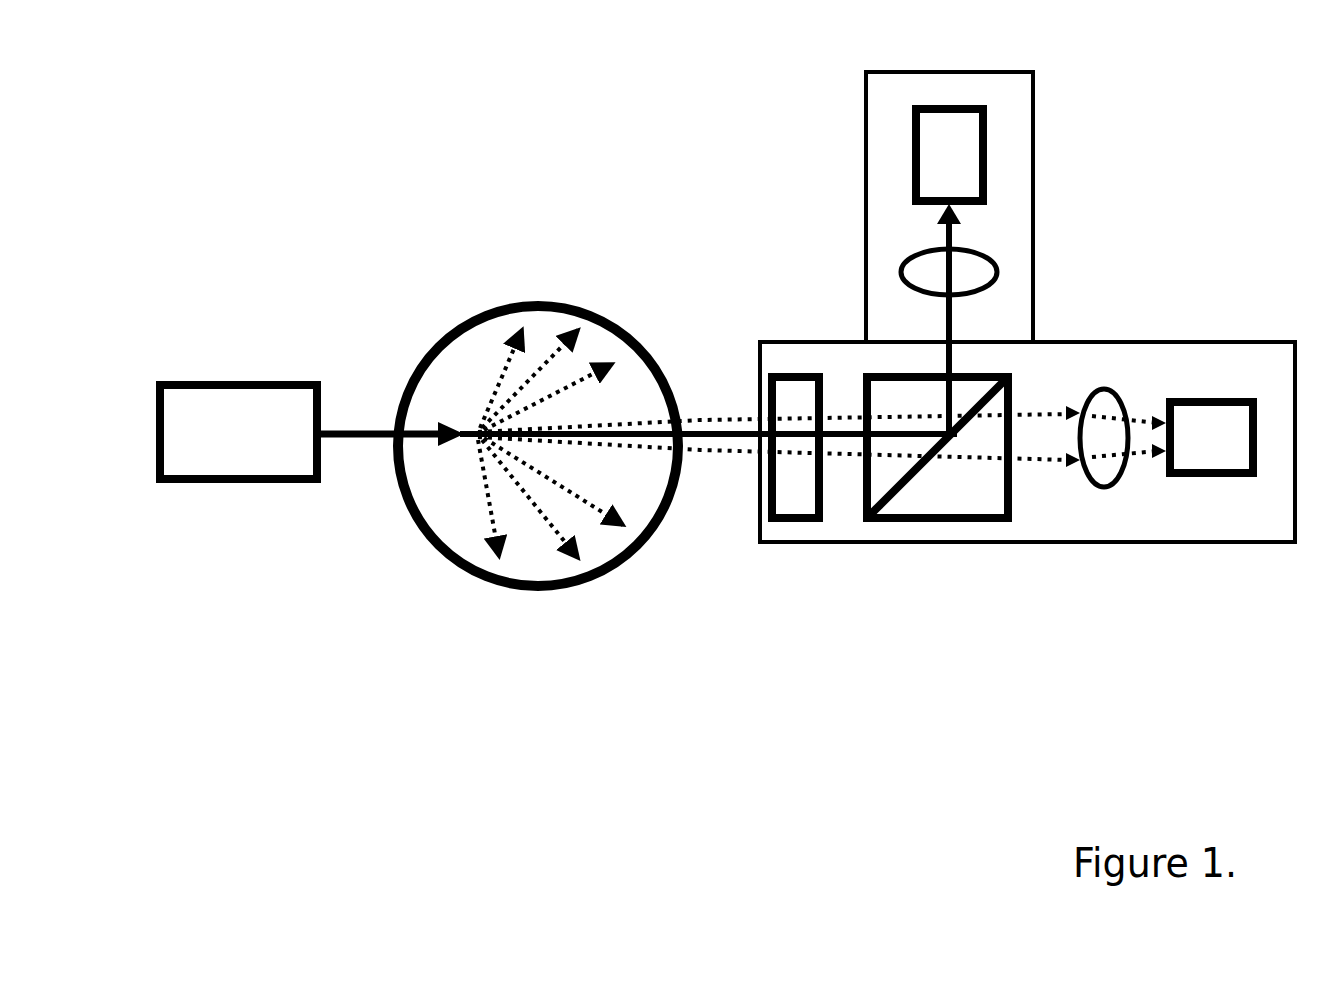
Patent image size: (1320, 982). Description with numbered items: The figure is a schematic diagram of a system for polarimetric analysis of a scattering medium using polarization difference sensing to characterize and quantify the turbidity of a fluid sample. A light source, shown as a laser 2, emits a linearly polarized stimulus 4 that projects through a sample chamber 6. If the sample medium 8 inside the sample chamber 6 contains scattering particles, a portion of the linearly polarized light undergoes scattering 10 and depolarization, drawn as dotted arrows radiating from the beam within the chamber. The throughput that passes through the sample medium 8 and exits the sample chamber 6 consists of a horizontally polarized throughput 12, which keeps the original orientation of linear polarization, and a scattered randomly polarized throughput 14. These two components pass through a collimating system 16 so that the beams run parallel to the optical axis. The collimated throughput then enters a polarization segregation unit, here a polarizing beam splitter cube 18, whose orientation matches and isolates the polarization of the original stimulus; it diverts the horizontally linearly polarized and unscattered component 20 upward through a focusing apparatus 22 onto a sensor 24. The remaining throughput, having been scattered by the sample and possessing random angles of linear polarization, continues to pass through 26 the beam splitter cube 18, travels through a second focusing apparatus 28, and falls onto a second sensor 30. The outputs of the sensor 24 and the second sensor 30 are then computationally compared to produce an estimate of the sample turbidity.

The laser 2 is at (212, 433).
The linearly polarized stimulus 4 is at (361, 438).
The sample chamber 6 is at (432, 350).
The sample medium 8 is at (465, 515).
The scattering 10 is at (478, 425).
The horizontally polarized throughput 12 is at (715, 434).
The scattered randomly polarized throughput 14 is at (733, 458).
The collimating system 16 is at (795, 493).
The polarizing beam splitter cube 18 is at (949, 483).
The horizontally linearly polarized and unscattered component 20 is at (949, 318).
The focusing apparatus 22 is at (972, 272).
The sensor 24 is at (950, 143).
The pass through 26 is at (1045, 460).
The focusing apparatus 28 is at (1104, 390).
The second sensor 30 is at (1204, 437).